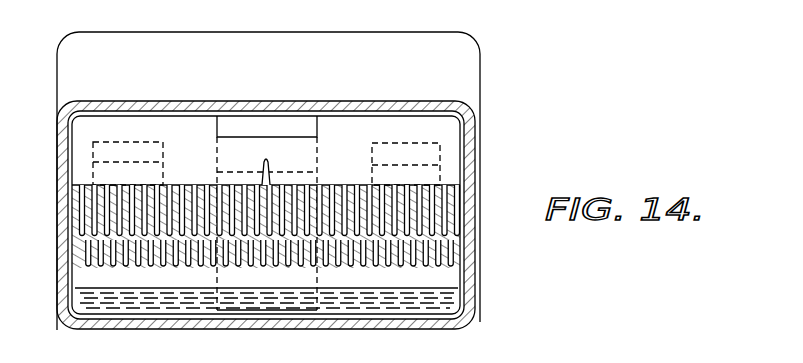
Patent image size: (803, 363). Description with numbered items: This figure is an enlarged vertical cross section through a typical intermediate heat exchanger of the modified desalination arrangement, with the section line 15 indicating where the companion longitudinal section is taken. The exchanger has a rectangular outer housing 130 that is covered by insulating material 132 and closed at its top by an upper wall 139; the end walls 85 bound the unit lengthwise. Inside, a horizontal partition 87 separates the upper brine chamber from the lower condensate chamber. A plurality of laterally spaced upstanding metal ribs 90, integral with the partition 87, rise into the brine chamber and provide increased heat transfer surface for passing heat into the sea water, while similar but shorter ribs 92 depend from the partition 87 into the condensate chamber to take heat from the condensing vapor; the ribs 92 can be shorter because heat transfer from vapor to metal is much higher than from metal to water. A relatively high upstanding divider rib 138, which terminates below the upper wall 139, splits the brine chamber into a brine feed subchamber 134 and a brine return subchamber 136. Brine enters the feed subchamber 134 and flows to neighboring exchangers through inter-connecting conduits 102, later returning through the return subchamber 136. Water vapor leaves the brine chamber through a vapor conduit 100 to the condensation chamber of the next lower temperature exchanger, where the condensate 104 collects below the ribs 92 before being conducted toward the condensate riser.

The section line 15 is at (267, 2).
The end wall 85 is at (456, 63).
The outer housing 130 is at (467, 131).
The insulating material 132 is at (468, 152).
The brine feed subchamber 134 is at (176, 125).
The brine return subchamber 136 is at (404, 122).
The upper wall 139 is at (292, 120).
The vapor conduit 100 is at (309, 136).
The liquid reservoir 104 is at (310, 292).
The inter-connecting conduit 102 is at (158, 188).
The horizontal partition 87 is at (178, 243).
The upstanding ribs 90 is at (94, 211).
The depending ribs 92 is at (90, 272).
The divider rib 138 is at (258, 168).